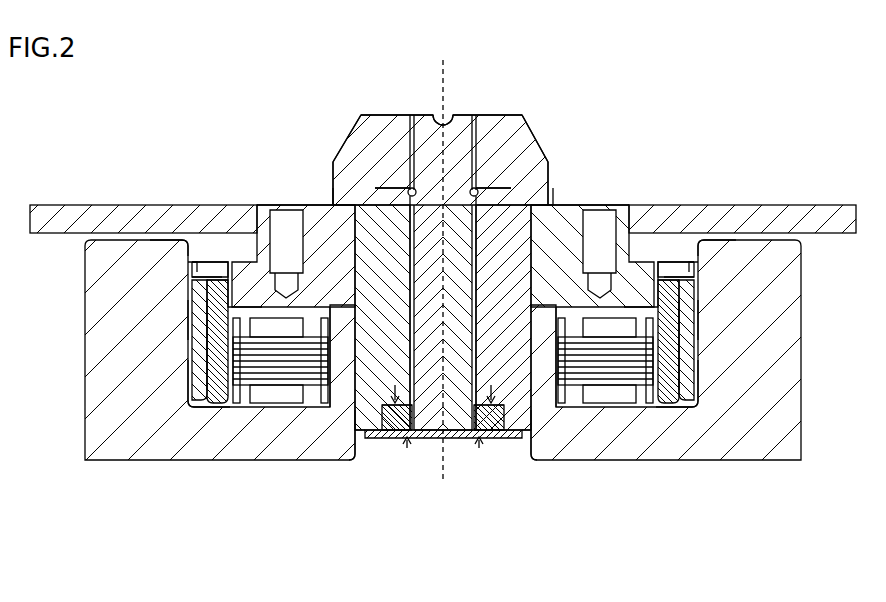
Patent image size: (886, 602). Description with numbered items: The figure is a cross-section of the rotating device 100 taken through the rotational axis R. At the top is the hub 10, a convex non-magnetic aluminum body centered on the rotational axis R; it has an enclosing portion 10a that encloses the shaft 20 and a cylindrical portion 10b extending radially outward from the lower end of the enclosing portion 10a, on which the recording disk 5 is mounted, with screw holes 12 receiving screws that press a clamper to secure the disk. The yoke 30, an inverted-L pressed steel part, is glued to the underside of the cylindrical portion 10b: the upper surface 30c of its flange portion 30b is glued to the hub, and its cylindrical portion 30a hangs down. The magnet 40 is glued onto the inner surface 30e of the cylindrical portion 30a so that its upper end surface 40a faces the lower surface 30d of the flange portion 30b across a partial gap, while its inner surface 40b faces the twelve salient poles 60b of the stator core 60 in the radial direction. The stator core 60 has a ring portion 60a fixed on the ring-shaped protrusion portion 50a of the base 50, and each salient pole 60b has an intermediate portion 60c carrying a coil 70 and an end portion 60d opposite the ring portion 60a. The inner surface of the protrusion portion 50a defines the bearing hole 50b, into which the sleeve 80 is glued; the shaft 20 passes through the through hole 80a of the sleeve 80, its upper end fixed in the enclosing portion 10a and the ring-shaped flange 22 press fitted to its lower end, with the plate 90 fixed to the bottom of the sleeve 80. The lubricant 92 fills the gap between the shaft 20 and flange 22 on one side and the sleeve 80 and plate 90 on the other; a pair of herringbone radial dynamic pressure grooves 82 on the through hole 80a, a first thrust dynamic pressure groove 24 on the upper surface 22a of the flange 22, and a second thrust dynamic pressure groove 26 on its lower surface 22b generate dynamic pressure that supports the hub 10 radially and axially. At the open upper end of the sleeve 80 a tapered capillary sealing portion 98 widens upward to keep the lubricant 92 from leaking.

The recording disk 5 is at (93, 212).
The hub 10 is at (370, 112).
The enclosing portion 10a is at (374, 112).
The cylindrical portion 10b is at (312, 205).
The screw holes 12 is at (283, 205).
The shaft 20 is at (450, 115).
The flange 22 is at (400, 420).
The upper surface of the flange 22a is at (385, 425).
The lower surface of the flange 22b is at (395, 440).
The first thrust dynamic pressure groove 24 is at (392, 442).
The second thrust dynamic pressure groove 26 is at (409, 448).
The yoke 30 is at (205, 462).
The cylindrical portion of the yoke 30a is at (186, 322).
The flange portion of the yoke 30b is at (186, 250).
The upper surface of the flange portion 30c is at (206, 258).
The lower surface of the flange portion 30d is at (198, 266).
The inner surface of the cylindrical portion 30e is at (187, 368).
The magnet 40 is at (216, 410).
The upper end surface of the magnet 40a is at (214, 283).
The inner surface of the magnet 40b is at (208, 345).
The base 50 is at (118, 462).
The ring-shaped protrusion portion 50a is at (345, 440).
The bearing hole 50b is at (332, 407).
The stator core 60 is at (244, 262).
The ring portion 60a is at (302, 392).
The salient poles 60b is at (288, 526).
The intermediate portion 60c is at (268, 405).
The end portion 60d is at (238, 405).
The coil 70 is at (266, 235).
The sleeve 80 is at (372, 440).
The through hole 80a is at (312, 210).
The radial dynamic pressure grooves 82 is at (414, 118).
The plate 90 is at (428, 438).
The lubricant 92 is at (362, 150).
The capillary sealing portion 98 is at (402, 140).
The rotating device 100 is at (456, 586).
The rotational axis R is at (441, 259).